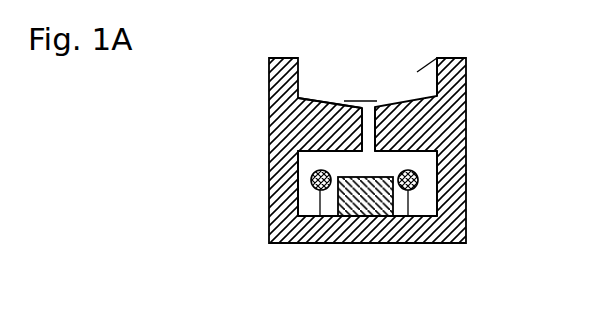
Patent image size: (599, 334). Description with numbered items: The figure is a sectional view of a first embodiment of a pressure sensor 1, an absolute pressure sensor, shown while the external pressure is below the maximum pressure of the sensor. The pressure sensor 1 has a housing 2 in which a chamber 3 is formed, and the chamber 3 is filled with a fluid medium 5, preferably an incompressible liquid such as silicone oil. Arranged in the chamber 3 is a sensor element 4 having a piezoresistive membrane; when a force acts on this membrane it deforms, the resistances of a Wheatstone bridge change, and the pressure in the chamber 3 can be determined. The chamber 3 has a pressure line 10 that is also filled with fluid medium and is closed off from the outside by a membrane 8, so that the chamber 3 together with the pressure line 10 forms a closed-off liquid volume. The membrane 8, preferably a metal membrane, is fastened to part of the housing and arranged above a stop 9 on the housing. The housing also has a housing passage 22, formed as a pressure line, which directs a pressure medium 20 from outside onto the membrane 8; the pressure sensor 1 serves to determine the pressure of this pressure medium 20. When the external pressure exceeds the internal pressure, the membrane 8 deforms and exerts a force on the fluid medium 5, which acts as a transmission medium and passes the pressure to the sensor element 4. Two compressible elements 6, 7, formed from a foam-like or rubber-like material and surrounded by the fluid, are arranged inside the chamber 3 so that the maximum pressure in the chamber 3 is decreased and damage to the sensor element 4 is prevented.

The pressure sensor 1 is at (238, 112).
The housing 2 is at (450, 158).
The chamber 3 is at (428, 202).
The sensor element 4 is at (357, 216).
The fluid medium 5 is at (302, 173).
The compressible element 6 is at (318, 216).
The compressible element 7 is at (400, 216).
The membrane 8 is at (343, 101).
The stop 9 is at (350, 100).
The pressure line 10 is at (367, 125).
The pressure medium 20 is at (416, 72).
The housing passage 22 is at (430, 77).